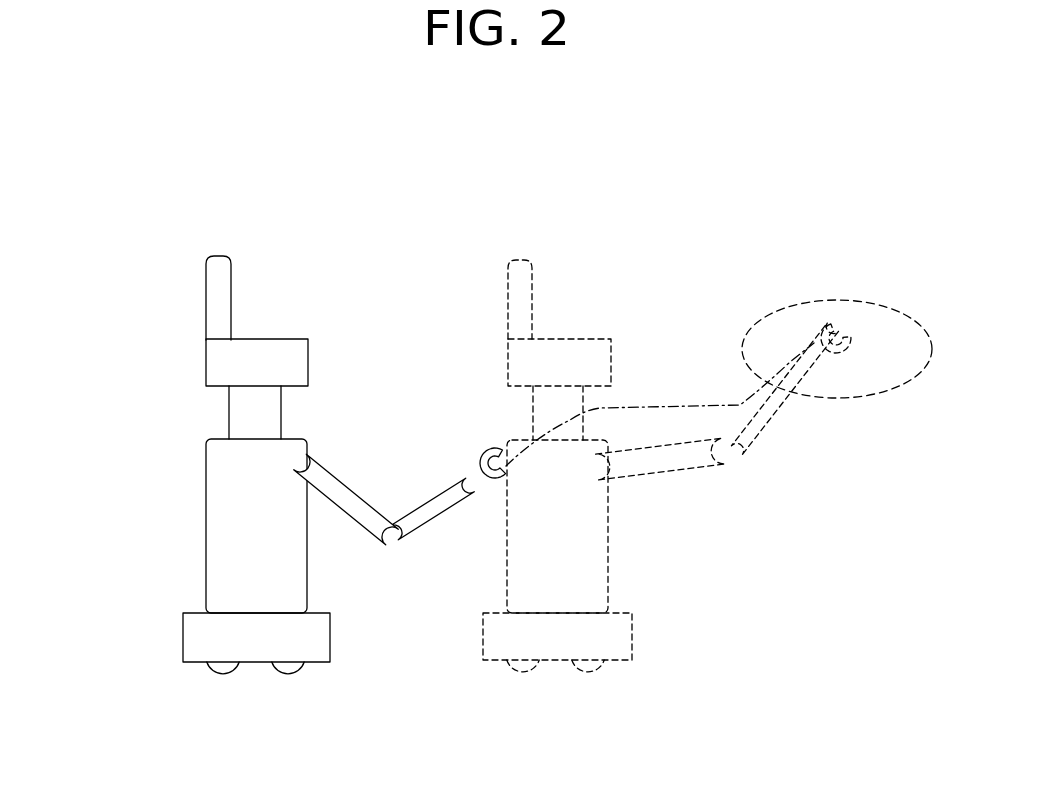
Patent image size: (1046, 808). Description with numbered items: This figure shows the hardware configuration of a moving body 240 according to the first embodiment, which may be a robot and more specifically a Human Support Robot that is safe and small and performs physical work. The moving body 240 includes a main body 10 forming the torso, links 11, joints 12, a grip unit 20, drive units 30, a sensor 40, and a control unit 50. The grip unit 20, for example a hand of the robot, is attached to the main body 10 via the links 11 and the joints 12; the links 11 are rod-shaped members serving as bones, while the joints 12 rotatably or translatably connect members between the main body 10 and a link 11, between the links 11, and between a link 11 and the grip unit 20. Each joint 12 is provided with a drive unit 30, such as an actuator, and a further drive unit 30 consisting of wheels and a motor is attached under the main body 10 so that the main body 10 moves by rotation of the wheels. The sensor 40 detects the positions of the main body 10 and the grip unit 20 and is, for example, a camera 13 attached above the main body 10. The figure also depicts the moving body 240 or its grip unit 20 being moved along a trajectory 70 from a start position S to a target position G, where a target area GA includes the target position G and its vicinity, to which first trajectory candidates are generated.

The main body 10 is at (206, 470).
The links 11 is at (332, 490).
The joints 12 is at (249, 556).
The camera 13 is at (349, 414).
The grip unit 20 is at (470, 420).
The drive units 30 is at (385, 625).
The sensor 40 is at (418, 547).
The control unit 50 is at (206, 362).
The trajectory 70 is at (666, 406).
The moving body 240 is at (628, 410).
The start position S is at (455, 342).
The target position G is at (834, 340).
The target area GA is at (868, 300).